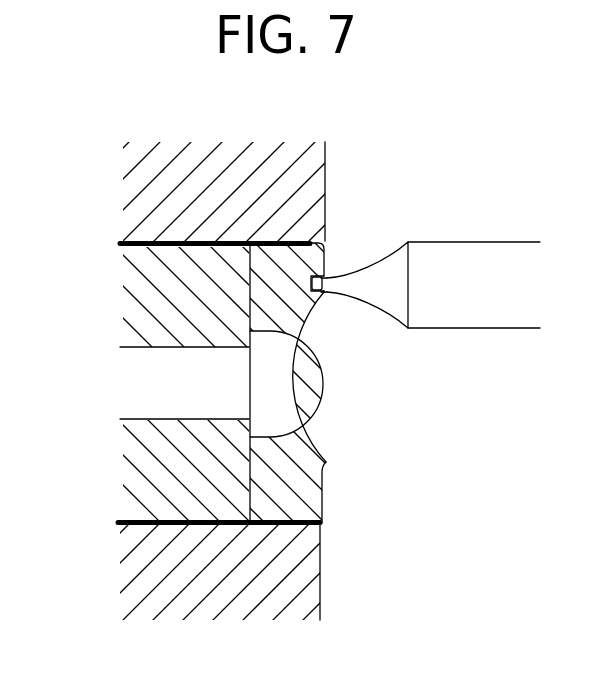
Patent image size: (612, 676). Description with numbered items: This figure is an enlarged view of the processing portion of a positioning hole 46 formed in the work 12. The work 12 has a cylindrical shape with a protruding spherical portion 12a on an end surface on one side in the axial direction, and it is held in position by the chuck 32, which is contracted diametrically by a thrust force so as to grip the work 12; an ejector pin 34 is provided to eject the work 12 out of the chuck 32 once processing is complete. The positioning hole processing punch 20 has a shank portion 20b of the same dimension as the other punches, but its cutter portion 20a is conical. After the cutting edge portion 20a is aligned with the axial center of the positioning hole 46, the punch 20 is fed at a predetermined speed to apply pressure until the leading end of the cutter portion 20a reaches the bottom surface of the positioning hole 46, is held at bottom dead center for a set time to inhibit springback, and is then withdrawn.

The work 12 is at (312, 507).
The spherical portion 12a is at (343, 418).
The positioning hole processing punch 20 is at (480, 267).
The cutter portion 20a is at (327, 276).
The shank portion 20b is at (520, 305).
The chuck 32 is at (303, 587).
The ejector pin 34 is at (152, 470).
The positioning hole 46 is at (312, 277).